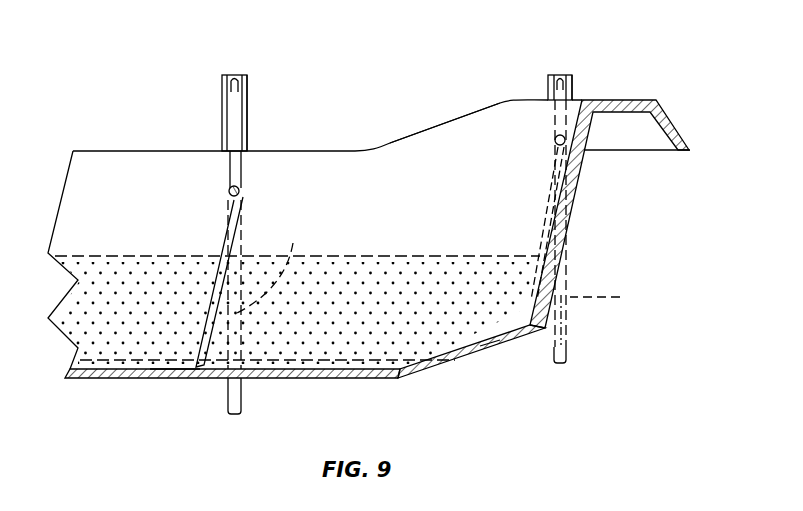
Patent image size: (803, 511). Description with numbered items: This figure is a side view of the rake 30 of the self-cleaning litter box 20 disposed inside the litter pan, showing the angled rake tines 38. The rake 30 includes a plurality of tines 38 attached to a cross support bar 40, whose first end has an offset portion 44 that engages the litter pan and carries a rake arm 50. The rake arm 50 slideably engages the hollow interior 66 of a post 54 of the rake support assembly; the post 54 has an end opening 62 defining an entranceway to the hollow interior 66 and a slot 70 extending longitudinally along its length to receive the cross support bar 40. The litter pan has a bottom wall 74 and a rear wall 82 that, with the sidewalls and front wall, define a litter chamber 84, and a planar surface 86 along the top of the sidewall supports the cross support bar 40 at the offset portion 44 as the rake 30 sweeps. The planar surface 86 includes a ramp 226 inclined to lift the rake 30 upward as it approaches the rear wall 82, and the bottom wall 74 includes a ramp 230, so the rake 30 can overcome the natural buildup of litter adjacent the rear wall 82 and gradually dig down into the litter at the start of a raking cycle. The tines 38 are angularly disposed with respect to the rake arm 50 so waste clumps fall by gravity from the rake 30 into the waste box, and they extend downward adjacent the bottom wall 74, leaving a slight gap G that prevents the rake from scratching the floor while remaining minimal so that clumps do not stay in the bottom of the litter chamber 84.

The self-cleaning litter box 20 is at (369, 218).
The planar surface 86 is at (117, 150).
The litter chamber 84 is at (112, 209).
The ramp 226 is at (445, 123).
The bottom wall 74 is at (310, 378).
The ramp 230 is at (483, 345).
The rear wall 82 is at (583, 172).
The gap G is at (178, 380).
The post 54 is at (222, 112).
The end opening 62 is at (240, 75).
The hollow interior 66 is at (237, 110).
The slot 70 is at (233, 90).
The offset portion 44 is at (227, 168).
The cross support bar 40 is at (239, 189).
The tines 38 is at (226, 250).
The rake arm 50 is at (445, 269).
The rake 30 is at (258, 212).